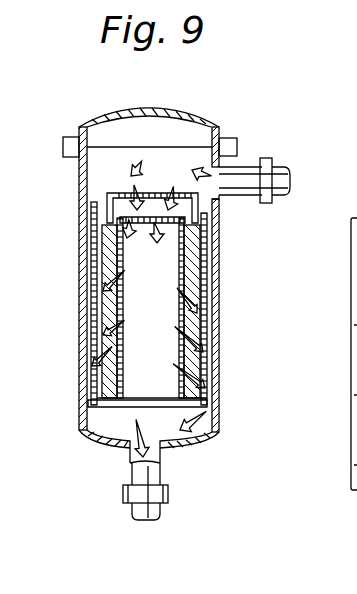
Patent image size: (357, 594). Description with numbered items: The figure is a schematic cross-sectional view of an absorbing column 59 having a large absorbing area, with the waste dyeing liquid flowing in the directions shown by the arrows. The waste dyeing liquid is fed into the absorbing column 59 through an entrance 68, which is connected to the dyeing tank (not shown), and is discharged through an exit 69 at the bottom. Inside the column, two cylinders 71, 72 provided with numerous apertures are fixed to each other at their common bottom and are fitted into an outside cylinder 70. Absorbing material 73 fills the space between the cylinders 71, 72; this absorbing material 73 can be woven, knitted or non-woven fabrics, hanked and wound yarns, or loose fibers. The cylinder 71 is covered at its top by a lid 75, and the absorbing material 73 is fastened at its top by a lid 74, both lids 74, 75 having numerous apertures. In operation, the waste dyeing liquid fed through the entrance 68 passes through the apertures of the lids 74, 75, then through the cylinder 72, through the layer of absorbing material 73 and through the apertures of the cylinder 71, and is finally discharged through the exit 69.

The absorbing column 59 is at (135, 109).
The entrance 68 is at (271, 175).
The exit 69 is at (154, 507).
The outside cylinder 70 is at (79, 251).
The cylinder 71 is at (219, 253).
The cylinder 72 is at (178, 326).
The absorbing material 73 is at (208, 290).
The lid 74 is at (160, 193).
The lid 75 is at (150, 307).